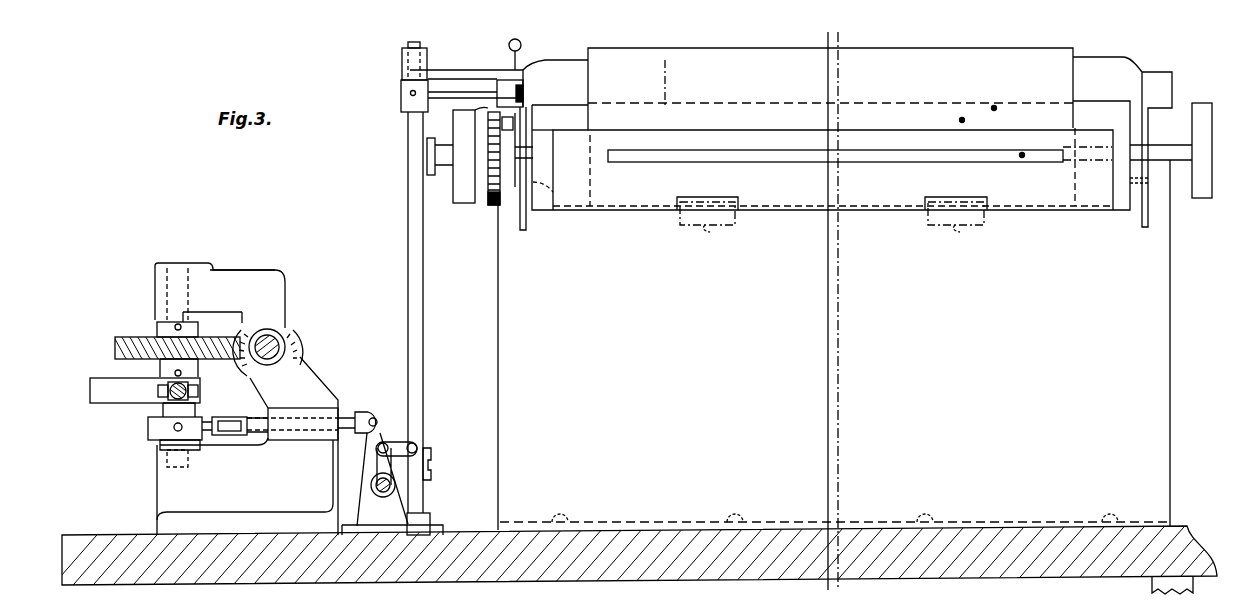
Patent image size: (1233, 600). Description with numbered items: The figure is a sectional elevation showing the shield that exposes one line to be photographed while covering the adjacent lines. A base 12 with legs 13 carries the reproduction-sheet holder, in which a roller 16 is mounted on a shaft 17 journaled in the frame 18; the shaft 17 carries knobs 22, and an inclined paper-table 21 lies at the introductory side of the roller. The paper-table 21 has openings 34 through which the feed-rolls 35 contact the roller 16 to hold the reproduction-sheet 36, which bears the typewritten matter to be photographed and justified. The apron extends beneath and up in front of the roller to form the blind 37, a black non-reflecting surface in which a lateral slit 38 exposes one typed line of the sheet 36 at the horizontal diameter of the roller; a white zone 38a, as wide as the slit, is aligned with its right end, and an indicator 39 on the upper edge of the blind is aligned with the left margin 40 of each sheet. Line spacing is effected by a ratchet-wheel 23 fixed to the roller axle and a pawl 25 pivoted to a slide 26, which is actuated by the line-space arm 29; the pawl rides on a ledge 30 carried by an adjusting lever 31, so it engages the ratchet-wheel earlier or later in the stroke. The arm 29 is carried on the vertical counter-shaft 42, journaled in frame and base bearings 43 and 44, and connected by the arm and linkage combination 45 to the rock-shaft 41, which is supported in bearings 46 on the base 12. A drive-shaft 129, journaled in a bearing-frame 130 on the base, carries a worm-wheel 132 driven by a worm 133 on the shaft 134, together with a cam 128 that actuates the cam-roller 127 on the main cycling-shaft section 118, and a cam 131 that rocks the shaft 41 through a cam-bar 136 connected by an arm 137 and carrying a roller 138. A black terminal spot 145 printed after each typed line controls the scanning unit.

The base 12 is at (116, 530).
The legs 13 is at (1152, 586).
The roller 16 is at (831, 155).
The shaft 17 is at (1176, 145).
The frame 18 is at (834, 345).
The paper-table 21 is at (1104, 45).
The knobs 22 is at (1204, 198).
The ratchet-wheel 23 is at (492, 208).
The pawl 25 is at (488, 112).
The slide 26 is at (523, 96).
The line-space arm 29 is at (401, 93).
The ledge 30 is at (508, 130).
The adjusting lever 31 is at (522, 45).
The openings 34 is at (710, 197).
The feed-rolls 35 is at (712, 232).
The reproduction-sheet 36 is at (830, 89).
The blind 37 is at (822, 170).
The slit 38 is at (780, 164).
The white zone 38a is at (1094, 176).
The indicator 39 is at (665, 125).
The left margin 40 is at (665, 73).
The rock-shaft 41 is at (376, 489).
The vertical counter-shaft 42 is at (423, 296).
The frame bearing 43 is at (444, 70).
The base bearing 44 is at (430, 516).
The arm and linkage combination 45 is at (399, 434).
The bearings 46 is at (389, 479).
The main cycling-shaft section 118 is at (168, 392).
The cam-roller 127 is at (198, 388).
The cam 128 is at (95, 378).
The drive-shaft 129 is at (178, 263).
The bearing-frame 130 is at (247, 402).
The cam 131 is at (148, 427).
The worm-wheel 132 is at (120, 337).
The worm 133 is at (300, 340).
The shaft 134 is at (264, 335).
The cam-bar 136 is at (346, 412).
The arm 137 is at (370, 446).
The roller 138 is at (220, 417).
The black terminal spot 145 is at (997, 108).